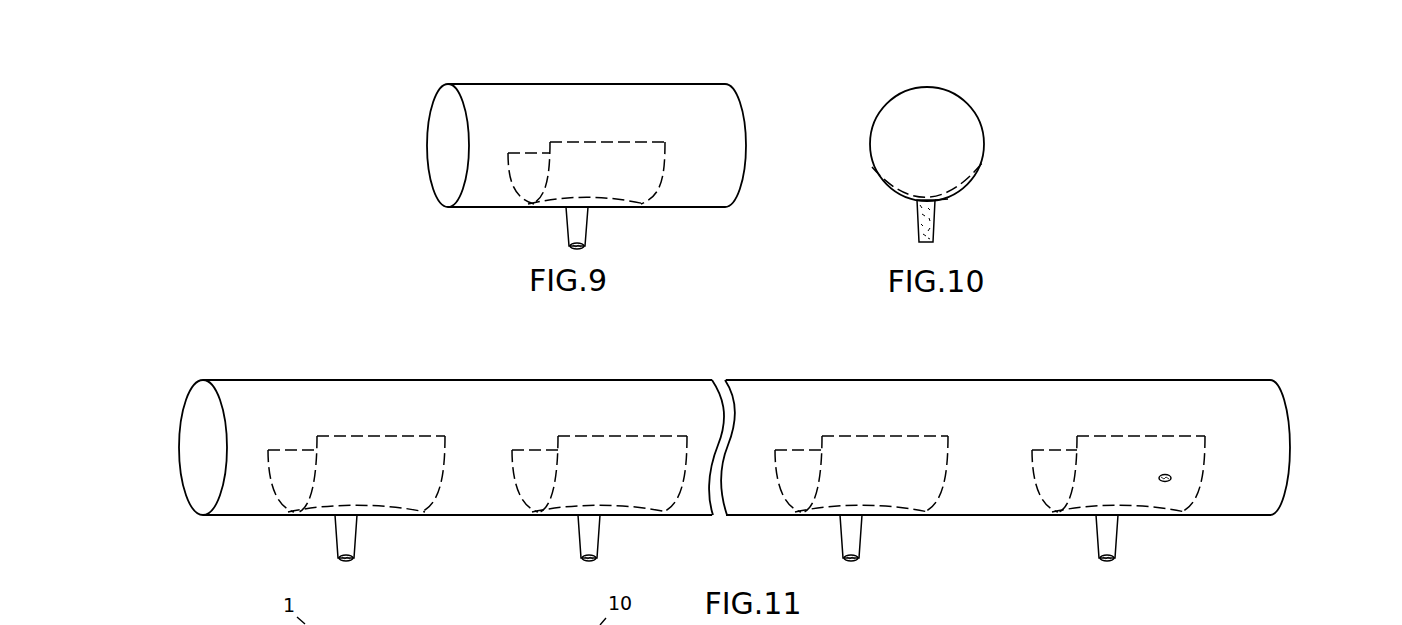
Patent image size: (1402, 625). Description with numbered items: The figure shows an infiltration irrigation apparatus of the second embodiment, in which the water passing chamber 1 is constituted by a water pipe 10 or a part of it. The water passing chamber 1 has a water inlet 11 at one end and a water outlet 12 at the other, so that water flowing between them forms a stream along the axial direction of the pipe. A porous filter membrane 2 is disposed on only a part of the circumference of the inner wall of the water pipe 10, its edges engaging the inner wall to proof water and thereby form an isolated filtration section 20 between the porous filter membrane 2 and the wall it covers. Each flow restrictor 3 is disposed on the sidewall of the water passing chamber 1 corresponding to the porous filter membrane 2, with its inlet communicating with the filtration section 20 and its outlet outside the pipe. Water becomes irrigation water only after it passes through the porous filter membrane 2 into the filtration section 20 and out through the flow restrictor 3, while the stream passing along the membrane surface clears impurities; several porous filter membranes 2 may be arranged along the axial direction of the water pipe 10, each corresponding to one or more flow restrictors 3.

In FIG. 9, the water passing chamber 1 is at (448, 128).
In FIG. 10, the water passing chamber 1 is at (960, 128).
In FIG. 11, the water passing chamber 1 is at (203, 463).
In FIG. 9, the porous filter membrane 2 is at (608, 157).
In FIG. 10, the porous filter membrane 2 is at (950, 188).
In FIG. 11, the porous filter membrane 2 is at (353, 450).
In FIG. 9, the flow restrictor 3 is at (572, 226).
In FIG. 10, the flow restrictor 3 is at (917, 222).
In FIG. 11, the flow restrictor 3 is at (343, 532).
In FIG. 11, the water pipe 10 is at (752, 380).
In FIG. 9, the water inlet 11 is at (427, 160).
In FIG. 11, the water inlet 11 is at (178, 432).
In FIG. 9, the water outlet 12 is at (737, 143).
In FIG. 11, the water outlet 12 is at (1292, 447).
In FIG. 9, the filtration section 20 is at (610, 207).
In FIG. 10, the filtration section 20 is at (947, 198).
In FIG. 11, the filtration section 20 is at (373, 512).